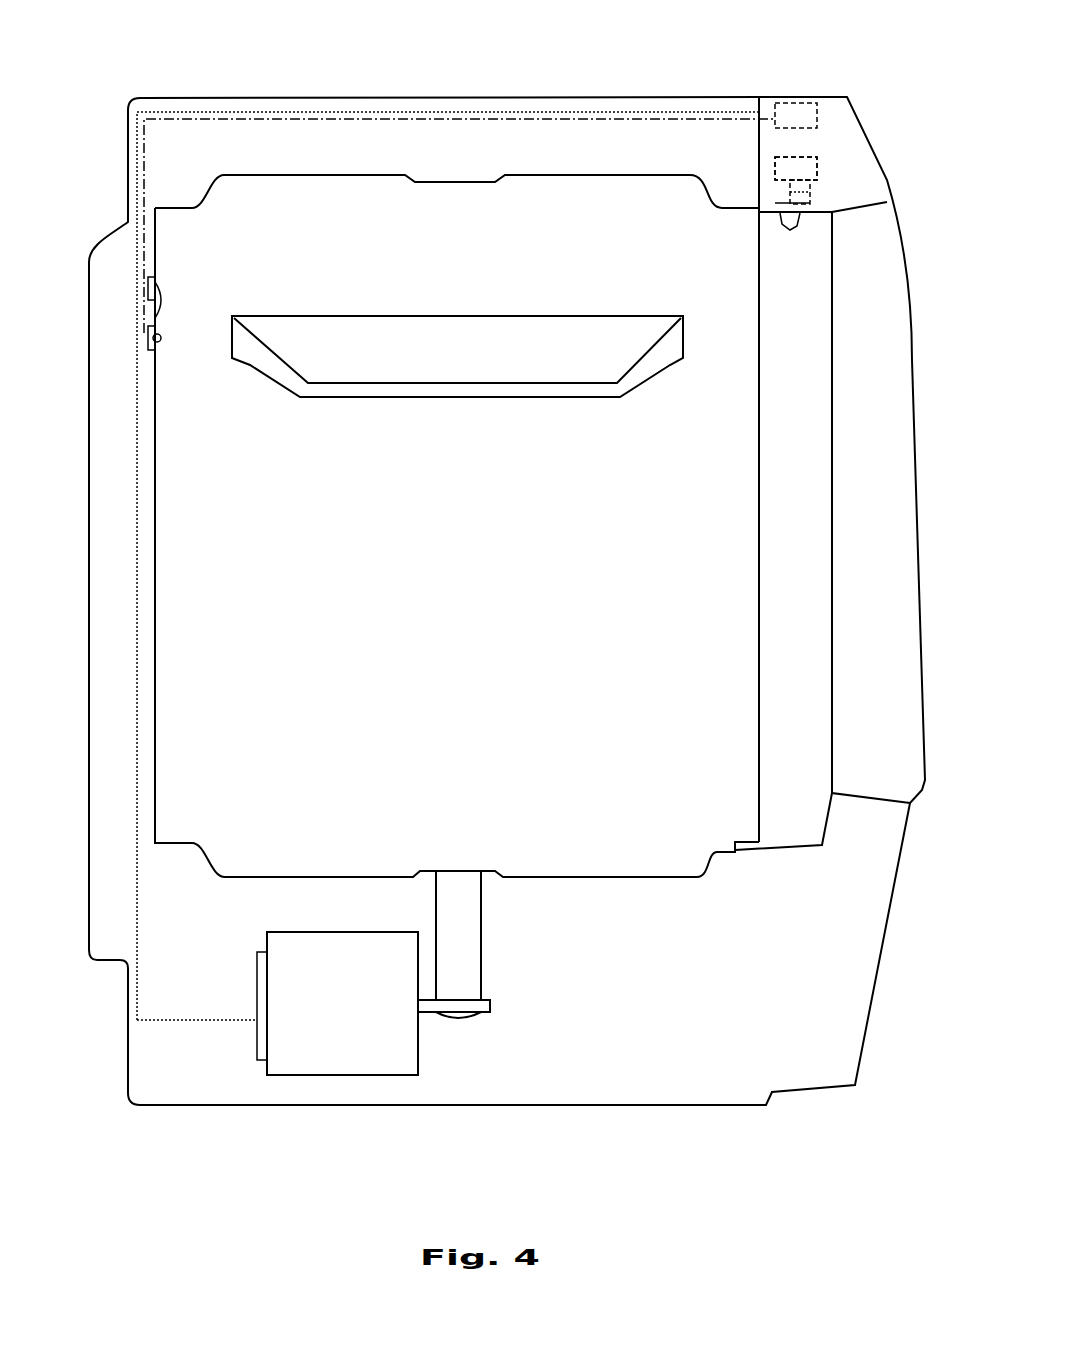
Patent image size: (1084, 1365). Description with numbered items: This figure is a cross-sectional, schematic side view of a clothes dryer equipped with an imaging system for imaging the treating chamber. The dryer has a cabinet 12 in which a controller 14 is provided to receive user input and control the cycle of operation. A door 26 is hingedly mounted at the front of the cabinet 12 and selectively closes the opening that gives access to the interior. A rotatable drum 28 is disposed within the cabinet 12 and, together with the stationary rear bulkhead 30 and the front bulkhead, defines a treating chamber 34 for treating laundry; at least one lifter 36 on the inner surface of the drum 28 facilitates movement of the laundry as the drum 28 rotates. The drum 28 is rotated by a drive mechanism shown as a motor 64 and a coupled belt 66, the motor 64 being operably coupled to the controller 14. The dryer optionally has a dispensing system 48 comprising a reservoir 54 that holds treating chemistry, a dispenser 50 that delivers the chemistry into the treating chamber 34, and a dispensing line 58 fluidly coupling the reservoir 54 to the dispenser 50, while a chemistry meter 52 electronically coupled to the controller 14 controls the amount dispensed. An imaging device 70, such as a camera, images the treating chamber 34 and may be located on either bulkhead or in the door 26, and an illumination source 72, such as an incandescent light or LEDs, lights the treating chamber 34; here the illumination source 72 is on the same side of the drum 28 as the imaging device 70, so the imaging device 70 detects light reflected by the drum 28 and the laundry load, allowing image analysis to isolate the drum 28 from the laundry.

The cabinet 12 is at (193, 98).
The controller 14 is at (785, 105).
The door 26 is at (875, 367).
The rotatable drum 28 is at (372, 175).
The rear bulkhead 30 is at (155, 735).
The treating chamber 34 is at (243, 559).
The lifter 36 is at (490, 343).
The dispensing system 48 is at (820, 203).
The dispenser 50 is at (800, 225).
The chemistry meter 52 is at (817, 183).
The reservoir 54 is at (817, 160).
The dispensing line 58 is at (803, 192).
The motor 64 is at (315, 1027).
The belt 66 is at (468, 967).
The imaging device 70 is at (150, 345).
The illumination source 72 is at (150, 293).